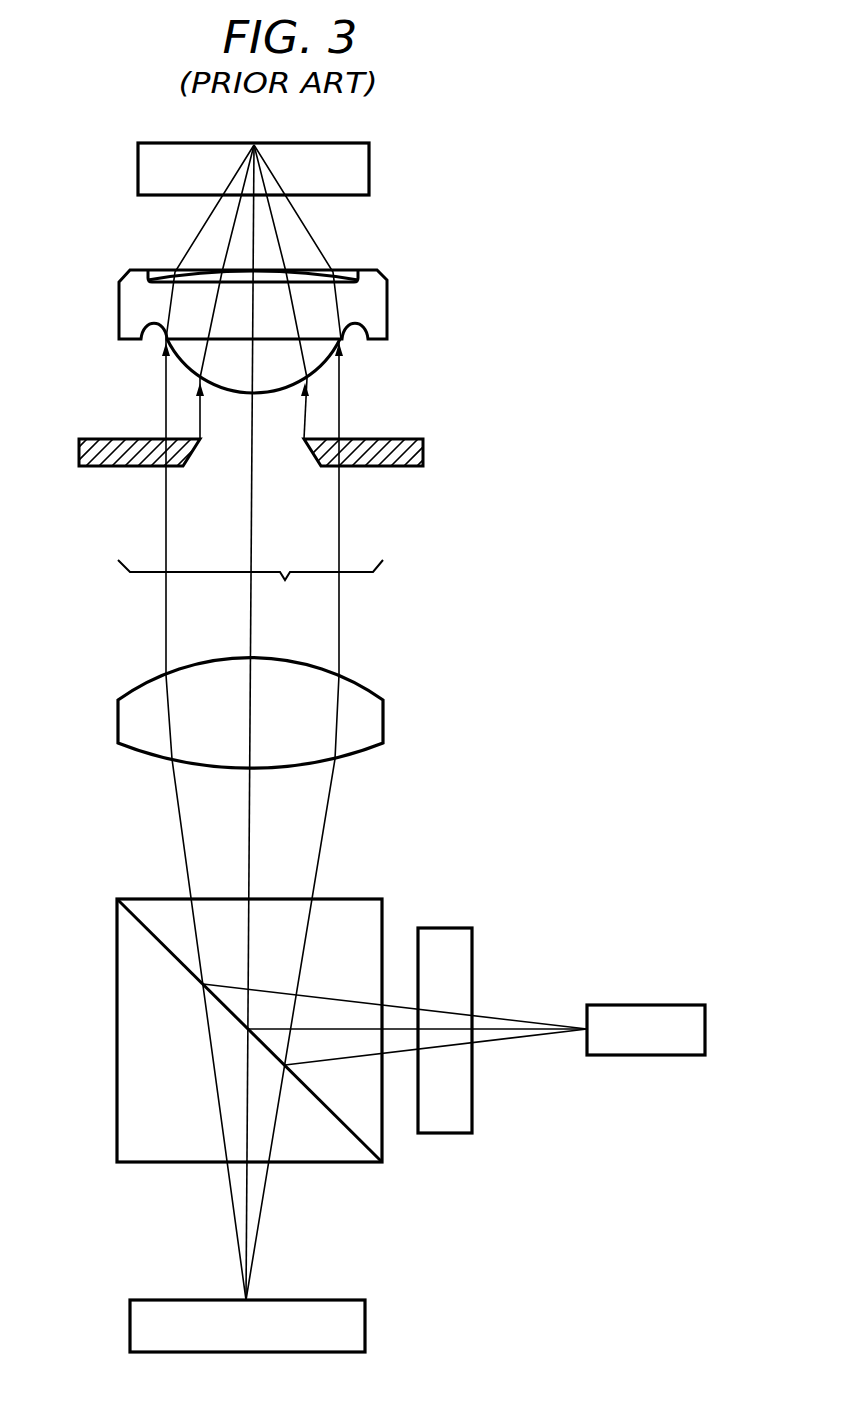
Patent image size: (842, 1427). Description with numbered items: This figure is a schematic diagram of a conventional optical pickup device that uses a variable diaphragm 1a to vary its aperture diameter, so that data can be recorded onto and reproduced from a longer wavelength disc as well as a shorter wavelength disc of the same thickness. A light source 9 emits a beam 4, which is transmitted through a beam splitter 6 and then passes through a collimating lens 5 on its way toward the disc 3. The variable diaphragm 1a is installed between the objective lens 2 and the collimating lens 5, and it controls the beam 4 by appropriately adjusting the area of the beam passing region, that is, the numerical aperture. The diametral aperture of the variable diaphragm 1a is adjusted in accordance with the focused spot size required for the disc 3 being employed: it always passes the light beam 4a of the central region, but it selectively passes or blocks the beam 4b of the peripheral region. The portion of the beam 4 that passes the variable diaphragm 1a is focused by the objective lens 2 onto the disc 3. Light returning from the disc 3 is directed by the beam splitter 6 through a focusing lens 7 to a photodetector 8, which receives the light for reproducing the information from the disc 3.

The variable diaphragm 1a is at (407, 439).
The objective lens 2 is at (118, 297).
The disc 3 is at (140, 142).
The beam 4 is at (250, 588).
The light beam of the central region 4a is at (252, 537).
The beam of the peripheral region 4b is at (164, 537).
The collimating lens 5 is at (383, 727).
The beam splitter 6 is at (117, 1045).
The focusing lens 7 is at (450, 1133).
The photodetector 8 is at (645, 1005).
The light source 9 is at (365, 1330).